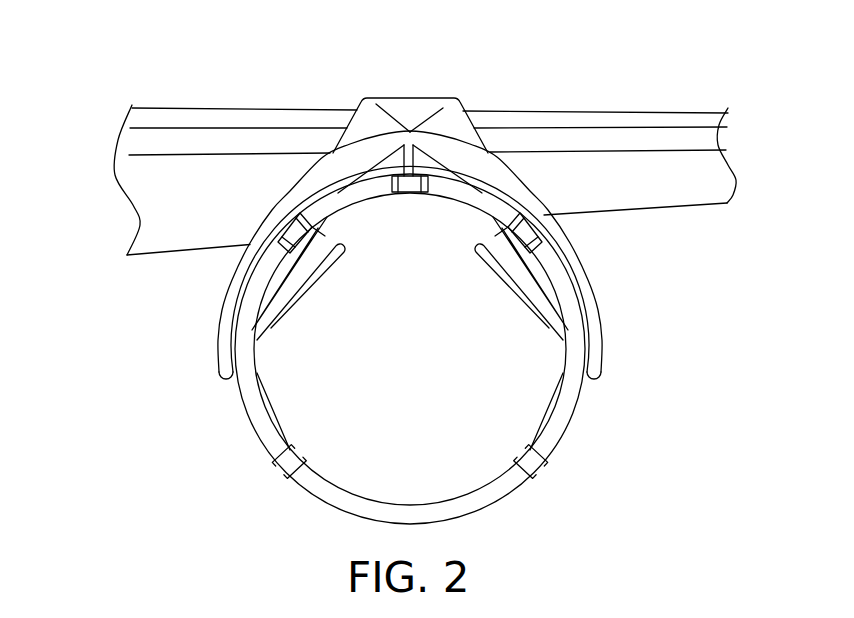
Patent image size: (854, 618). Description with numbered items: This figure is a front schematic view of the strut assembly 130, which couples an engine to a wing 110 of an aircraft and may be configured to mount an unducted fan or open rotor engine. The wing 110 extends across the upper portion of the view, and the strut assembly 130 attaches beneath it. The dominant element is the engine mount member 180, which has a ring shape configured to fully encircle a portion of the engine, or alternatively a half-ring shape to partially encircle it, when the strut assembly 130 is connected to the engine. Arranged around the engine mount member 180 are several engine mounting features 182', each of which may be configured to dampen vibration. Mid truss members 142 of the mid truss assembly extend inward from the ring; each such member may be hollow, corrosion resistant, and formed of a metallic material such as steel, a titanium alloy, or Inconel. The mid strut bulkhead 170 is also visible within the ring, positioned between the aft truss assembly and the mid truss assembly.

The wing 110 is at (425, 131).
The strut assembly 130 is at (456, 131).
The mid truss members 142 is at (275, 317).
The mid strut bulkhead 170 is at (412, 246).
The engine mount member 180 is at (577, 418).
The engine mounting feature 182' is at (410, 280).